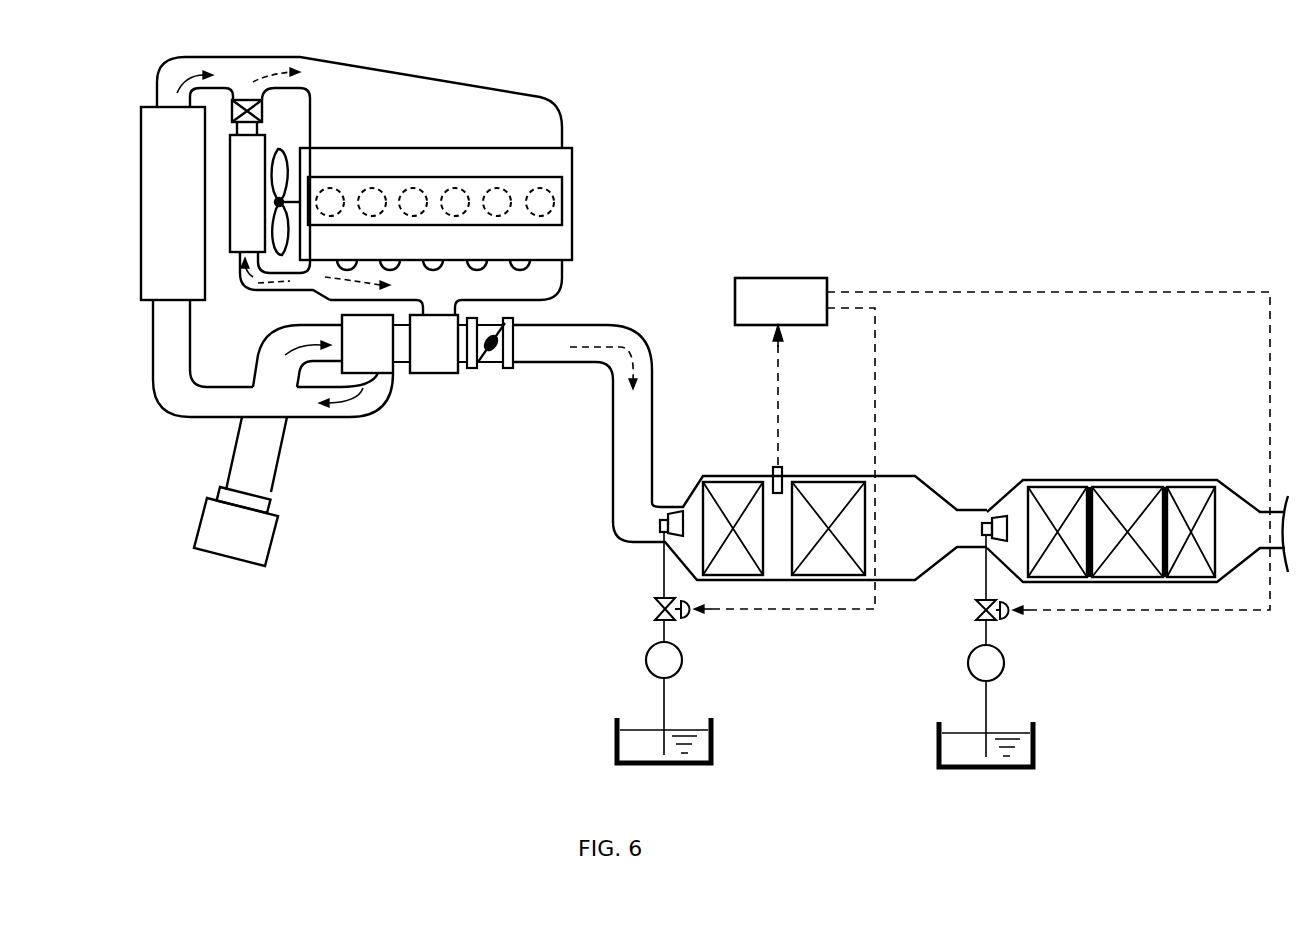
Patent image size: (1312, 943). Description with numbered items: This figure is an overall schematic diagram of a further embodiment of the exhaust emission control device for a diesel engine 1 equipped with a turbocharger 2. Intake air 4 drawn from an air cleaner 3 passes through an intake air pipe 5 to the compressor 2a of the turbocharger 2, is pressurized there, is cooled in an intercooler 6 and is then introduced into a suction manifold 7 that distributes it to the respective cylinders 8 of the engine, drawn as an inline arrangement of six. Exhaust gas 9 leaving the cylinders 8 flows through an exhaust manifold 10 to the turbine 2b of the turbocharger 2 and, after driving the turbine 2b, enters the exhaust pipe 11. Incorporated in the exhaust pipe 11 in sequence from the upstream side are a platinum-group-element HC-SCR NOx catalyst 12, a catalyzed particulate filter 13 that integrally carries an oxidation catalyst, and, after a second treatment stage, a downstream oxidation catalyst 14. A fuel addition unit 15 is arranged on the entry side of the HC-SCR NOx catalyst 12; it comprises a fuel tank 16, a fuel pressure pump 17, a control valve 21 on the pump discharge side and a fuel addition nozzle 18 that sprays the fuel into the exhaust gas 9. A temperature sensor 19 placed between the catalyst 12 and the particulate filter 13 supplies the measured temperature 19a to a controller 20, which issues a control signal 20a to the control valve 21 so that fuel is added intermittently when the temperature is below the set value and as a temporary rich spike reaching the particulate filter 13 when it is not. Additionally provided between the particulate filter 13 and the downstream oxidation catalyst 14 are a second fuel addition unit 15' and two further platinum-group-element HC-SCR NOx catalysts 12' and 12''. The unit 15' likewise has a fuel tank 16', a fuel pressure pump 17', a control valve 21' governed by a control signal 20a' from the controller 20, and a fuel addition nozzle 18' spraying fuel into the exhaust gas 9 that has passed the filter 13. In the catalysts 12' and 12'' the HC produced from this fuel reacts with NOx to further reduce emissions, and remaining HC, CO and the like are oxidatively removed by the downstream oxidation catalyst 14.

The diesel engine 1 is at (597, 201).
The turbocharger 2 is at (434, 399).
The compressor 2a is at (393, 368).
The turbine 2b is at (450, 362).
The air cleaner 3 is at (218, 535).
The intake air 4 is at (152, 388).
The intake air pipe 5 is at (152, 330).
The intercooler 6 is at (141, 125).
The suction manifold 7 is at (528, 108).
The cylinders 8 is at (497, 202).
The exhaust gas 9 is at (433, 298).
The exhaust manifold 10 is at (553, 275).
The exhaust pipe 11 is at (653, 380).
The HC-SCR NOx catalyst 12 is at (736, 492).
The HC-SCR NOx catalyst 12' is at (1065, 492).
The HC-SCR NOx catalyst 12'' is at (1132, 492).
The catalyzed particulate filter 13 is at (840, 493).
The downstream oxidation catalyst 14 is at (1195, 495).
The fuel addition unit 15 is at (608, 643).
The fuel addition unit 15' is at (939, 646).
The fuel tank 16 is at (620, 740).
The fuel tank 16' is at (944, 744).
The fuel pressure pump 17 is at (632, 662).
The fuel pressure pump 17' is at (959, 669).
The fuel addition nozzle 18 is at (675, 487).
The fuel addition nozzle 18' is at (1001, 490).
The temperature sensor 19 is at (783, 467).
The temperature 19a is at (780, 365).
The controller 20 is at (785, 278).
The control signal 20a is at (846, 458).
The control signal 20a' is at (1048, 408).
The control valve 21 is at (647, 617).
The control valve 21' is at (971, 627).